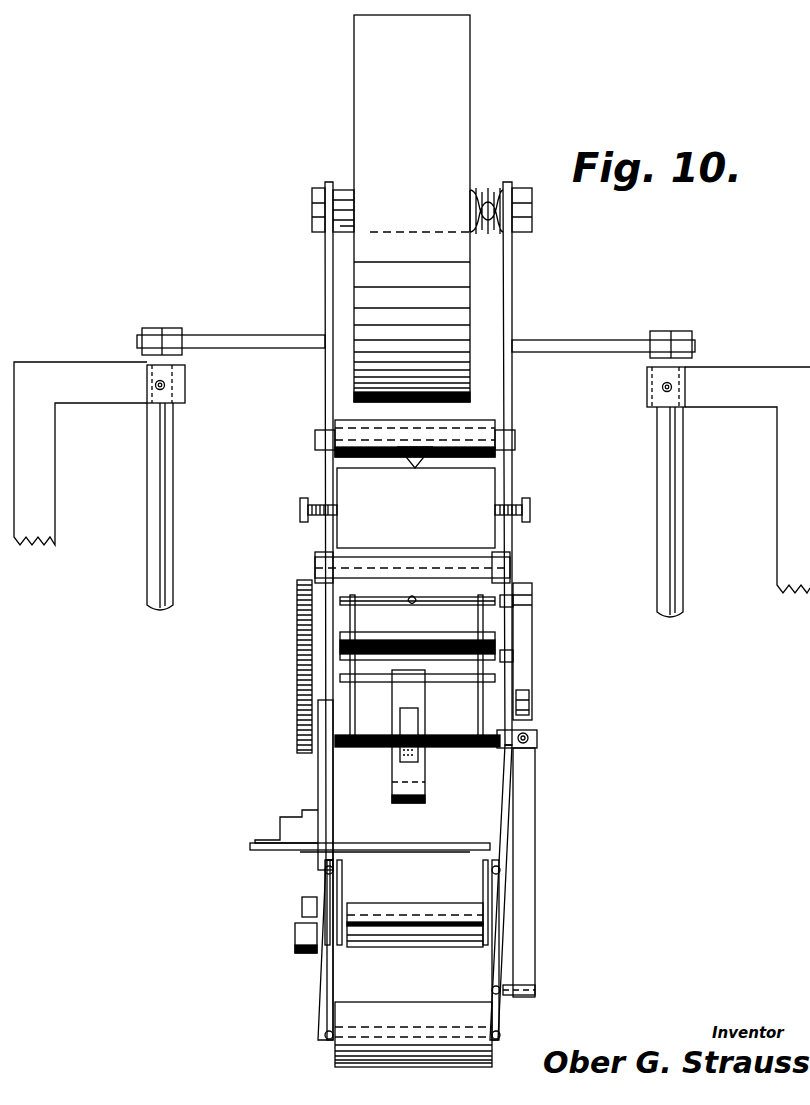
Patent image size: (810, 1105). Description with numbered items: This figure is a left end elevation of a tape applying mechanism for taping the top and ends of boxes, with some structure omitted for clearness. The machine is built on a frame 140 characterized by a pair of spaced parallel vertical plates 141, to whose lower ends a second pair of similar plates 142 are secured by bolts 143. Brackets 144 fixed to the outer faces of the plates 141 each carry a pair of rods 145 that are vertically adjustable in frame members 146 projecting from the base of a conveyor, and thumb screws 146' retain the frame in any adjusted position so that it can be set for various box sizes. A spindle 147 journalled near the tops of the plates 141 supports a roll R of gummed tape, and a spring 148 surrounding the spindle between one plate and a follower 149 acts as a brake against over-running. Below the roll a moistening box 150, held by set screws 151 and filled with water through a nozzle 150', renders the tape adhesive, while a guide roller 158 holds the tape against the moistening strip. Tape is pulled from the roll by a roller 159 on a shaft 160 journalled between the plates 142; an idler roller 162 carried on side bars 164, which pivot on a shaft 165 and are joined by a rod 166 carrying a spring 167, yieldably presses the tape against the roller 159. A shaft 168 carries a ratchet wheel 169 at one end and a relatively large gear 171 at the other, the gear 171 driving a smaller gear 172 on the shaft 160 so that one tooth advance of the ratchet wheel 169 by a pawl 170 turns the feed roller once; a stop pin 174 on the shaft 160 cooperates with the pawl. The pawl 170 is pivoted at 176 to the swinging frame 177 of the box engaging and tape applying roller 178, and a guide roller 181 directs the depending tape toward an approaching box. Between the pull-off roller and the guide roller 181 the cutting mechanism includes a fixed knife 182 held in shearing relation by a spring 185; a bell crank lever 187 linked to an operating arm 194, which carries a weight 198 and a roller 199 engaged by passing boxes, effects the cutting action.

The roll of tape R is at (352, 103).
The frame 140 is at (320, 384).
The vertical plates 141 is at (327, 248).
The plates 142 is at (322, 793).
The bolts 143 is at (315, 568).
The brackets 144 is at (232, 340).
The rods 145 is at (173, 490).
The frame members 146 is at (412, 477).
The thumb screws 146' is at (416, 386).
The spindle 147 is at (515, 200).
The spring 148 is at (478, 192).
The follower 149 is at (470, 232).
The moistening box 150 is at (416, 508).
The nozzle 150' is at (415, 432).
The set screws 151 is at (305, 505).
The guide roller 158 is at (495, 428).
The roller 159 is at (425, 798).
The shaft 160 is at (467, 748).
The idler roller 162 is at (392, 755).
The side bars 164 is at (352, 632).
The shaft 165 is at (384, 682).
The rod 166 is at (450, 592).
The spring 167 is at (410, 597).
The shaft 168 is at (425, 633).
The ratchet wheel 169 is at (532, 652).
The pawl 170 is at (525, 882).
The gear 171 is at (297, 630).
The gear 172 is at (318, 740).
The stop pin 174 is at (530, 735).
The pivotal connection 176 is at (500, 995).
The swinging frame 177 is at (327, 958).
The tape applying roller 178 is at (433, 1050).
The guide roller 181 is at (405, 938).
The fixed knife 182 is at (370, 833).
The spring 185 is at (370, 850).
The bell crank lever 187 is at (280, 826).
The operating arm 194 is at (322, 860).
The weight 198 is at (302, 900).
The roller 199 is at (297, 938).